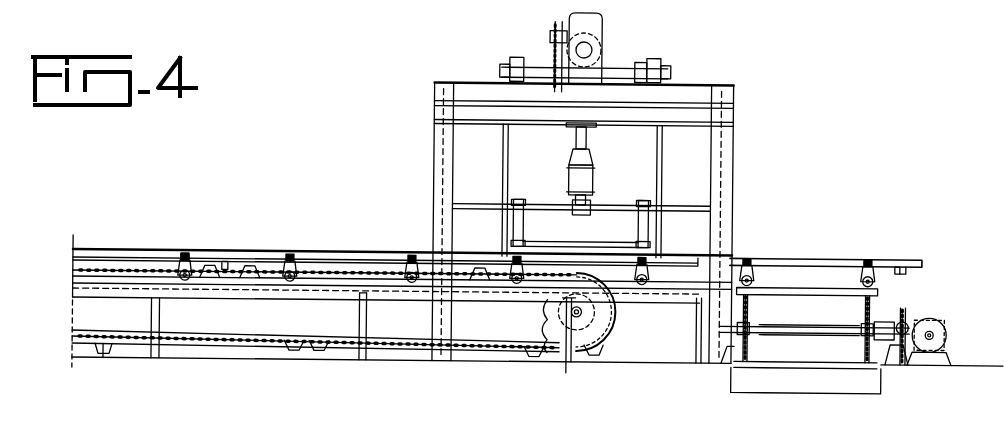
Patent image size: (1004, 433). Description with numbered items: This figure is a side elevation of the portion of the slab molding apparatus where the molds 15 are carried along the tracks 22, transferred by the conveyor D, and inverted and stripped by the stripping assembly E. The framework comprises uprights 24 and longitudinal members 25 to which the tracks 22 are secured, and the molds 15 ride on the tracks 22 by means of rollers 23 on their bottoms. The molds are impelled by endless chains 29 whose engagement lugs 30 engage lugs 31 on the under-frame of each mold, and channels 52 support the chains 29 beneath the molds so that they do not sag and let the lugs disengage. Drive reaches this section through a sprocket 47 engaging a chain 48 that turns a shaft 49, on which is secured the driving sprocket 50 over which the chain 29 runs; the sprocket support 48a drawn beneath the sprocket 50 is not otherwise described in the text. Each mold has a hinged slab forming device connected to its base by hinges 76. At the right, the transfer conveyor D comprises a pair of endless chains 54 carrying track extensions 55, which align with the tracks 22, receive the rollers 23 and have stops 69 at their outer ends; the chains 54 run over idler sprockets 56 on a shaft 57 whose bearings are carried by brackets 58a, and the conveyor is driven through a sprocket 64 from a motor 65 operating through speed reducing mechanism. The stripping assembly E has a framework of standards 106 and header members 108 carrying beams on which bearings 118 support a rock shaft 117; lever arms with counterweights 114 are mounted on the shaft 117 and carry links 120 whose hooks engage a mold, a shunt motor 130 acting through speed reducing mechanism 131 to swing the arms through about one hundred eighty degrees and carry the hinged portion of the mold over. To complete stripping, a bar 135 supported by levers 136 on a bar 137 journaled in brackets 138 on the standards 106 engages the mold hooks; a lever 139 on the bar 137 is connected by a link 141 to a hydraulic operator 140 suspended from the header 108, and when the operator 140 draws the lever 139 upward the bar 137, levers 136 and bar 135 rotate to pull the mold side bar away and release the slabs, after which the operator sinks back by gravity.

The molds 15 is at (263, 249).
The track means 22 is at (73, 283).
The rollers 23 is at (410, 280).
The uprights 24 is at (161, 318).
The longitudinal members 25 is at (290, 294).
The endless chains 29 is at (216, 335).
The engagement lugs 30 is at (112, 352).
The lugs 31 is at (224, 258).
The sprocket 47 is at (685, 335).
The chain 48 is at (636, 332).
The sprocket shaft 48a is at (574, 368).
The shaft 49 is at (614, 312).
The driving sprocket 50 is at (542, 316).
The channels 52 is at (73, 268).
The endless chains 54 is at (760, 300).
The track extensions 55 is at (831, 292).
The idler sprockets 56 is at (850, 340).
The shaft 57 is at (828, 324).
The brackets 58a is at (726, 356).
The sprocket 64 is at (906, 308).
The motor 65 is at (948, 328).
The stops 69 is at (876, 286).
The hinges 76 is at (185, 252).
The standards 106 is at (433, 172).
The header members 108 is at (706, 88).
The counterweights 114 is at (503, 60).
The rock shaft 117 is at (628, 62).
The bearings 118 is at (515, 52).
The links 120 is at (509, 157).
The shunt motor 130 is at (602, 48).
The speed reducing mechanism 131 is at (598, 22).
The bar 135 is at (560, 241).
The levers 136 is at (523, 222).
The bar 137 is at (470, 206).
The brackets 138 is at (433, 197).
The lever 139 is at (592, 203).
The hydraulic operator 140 is at (592, 170).
The link 141 is at (690, 122).
The stripping assembly E is at (398, 150).
The transfer conveyor D is at (803, 414).